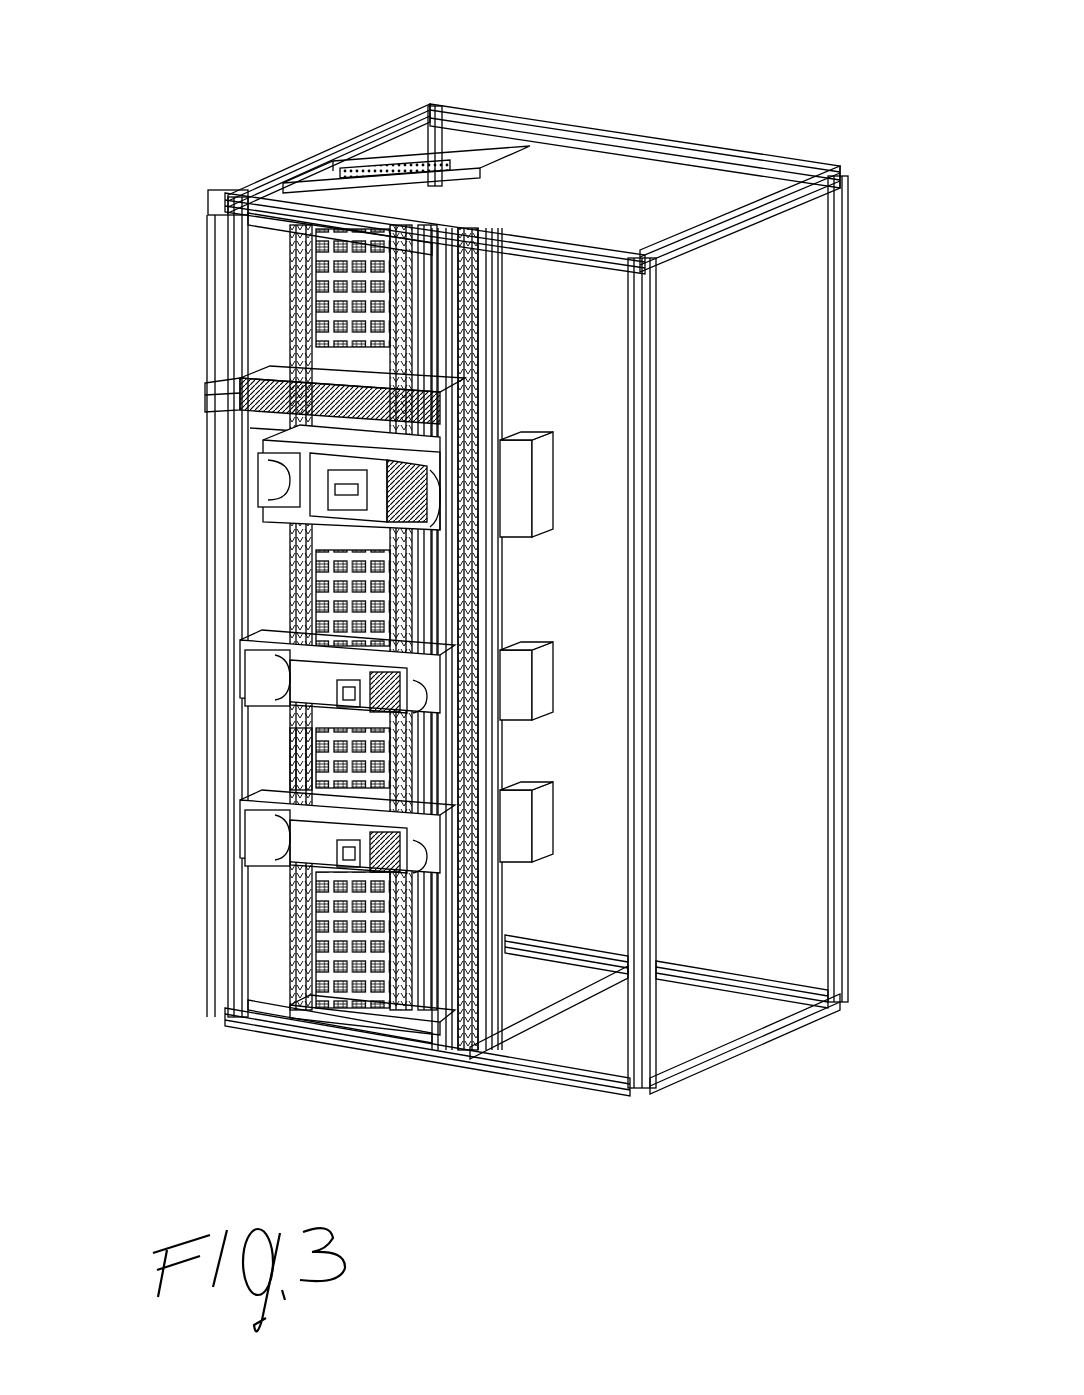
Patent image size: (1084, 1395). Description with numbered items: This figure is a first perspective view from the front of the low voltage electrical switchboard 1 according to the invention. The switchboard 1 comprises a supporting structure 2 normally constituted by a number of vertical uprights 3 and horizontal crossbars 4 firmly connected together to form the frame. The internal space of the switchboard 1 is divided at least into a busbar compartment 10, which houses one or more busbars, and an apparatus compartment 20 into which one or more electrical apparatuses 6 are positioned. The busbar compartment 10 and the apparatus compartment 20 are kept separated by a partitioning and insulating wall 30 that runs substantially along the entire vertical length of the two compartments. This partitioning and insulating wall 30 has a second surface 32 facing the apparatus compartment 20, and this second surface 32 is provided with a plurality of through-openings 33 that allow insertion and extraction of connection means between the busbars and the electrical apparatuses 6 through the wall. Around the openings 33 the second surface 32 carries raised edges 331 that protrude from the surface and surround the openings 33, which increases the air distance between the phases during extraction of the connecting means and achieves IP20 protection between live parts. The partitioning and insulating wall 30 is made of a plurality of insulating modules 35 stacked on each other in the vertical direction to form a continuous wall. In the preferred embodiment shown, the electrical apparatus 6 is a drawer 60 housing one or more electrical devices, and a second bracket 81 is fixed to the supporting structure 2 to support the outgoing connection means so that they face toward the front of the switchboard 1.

The low voltage electrical switchboard 1 is at (258, 96).
The supporting structure 2 is at (866, 186).
The vertical upright 3 is at (218, 257).
The horizontal crossbar 4 is at (366, 140).
The busbar compartment 10 is at (396, 157).
The apparatus compartment 20 is at (254, 608).
The partitioning and insulating wall 30 is at (300, 322).
The second surface 32 is at (330, 910).
The through-openings 33 is at (300, 724).
The raised edges 331 is at (300, 766).
The insulating modules 35 is at (336, 1000).
The electrical apparatus 6 is at (268, 482).
The drawer 60 is at (292, 512).
The second bracket 81 is at (490, 601).